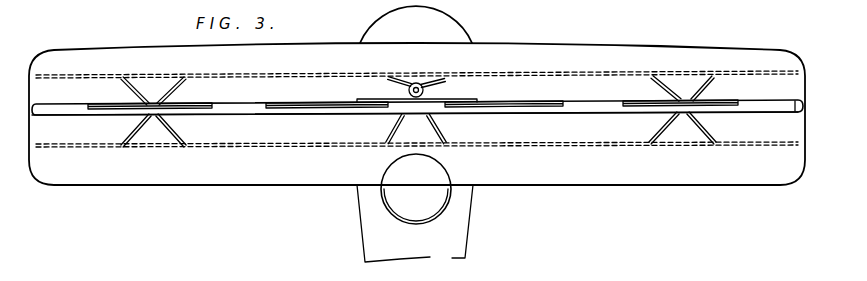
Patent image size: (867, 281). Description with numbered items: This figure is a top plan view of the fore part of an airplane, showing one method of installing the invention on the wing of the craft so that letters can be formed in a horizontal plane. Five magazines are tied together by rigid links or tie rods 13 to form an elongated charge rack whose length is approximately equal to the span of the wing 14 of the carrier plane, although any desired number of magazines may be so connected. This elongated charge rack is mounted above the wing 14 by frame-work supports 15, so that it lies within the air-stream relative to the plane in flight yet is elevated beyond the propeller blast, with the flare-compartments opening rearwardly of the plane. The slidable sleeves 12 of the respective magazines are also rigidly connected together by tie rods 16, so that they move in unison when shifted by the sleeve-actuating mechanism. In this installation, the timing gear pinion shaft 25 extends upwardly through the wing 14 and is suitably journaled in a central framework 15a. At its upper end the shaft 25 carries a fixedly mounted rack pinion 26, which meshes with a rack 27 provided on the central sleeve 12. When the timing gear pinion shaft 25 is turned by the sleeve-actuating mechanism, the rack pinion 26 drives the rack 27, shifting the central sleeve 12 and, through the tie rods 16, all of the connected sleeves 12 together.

The slidable sleeve 12 is at (70, 112).
The tie rod 13 is at (123, 114).
The wing 14 is at (325, 178).
The frame-work support 15 is at (133, 87).
The central framework 15a is at (395, 78).
The tie rod 16 is at (113, 104).
The timing gear pinion shaft 25 is at (421, 87).
The rack pinion 26 is at (416, 82).
The rack 27 is at (462, 99).